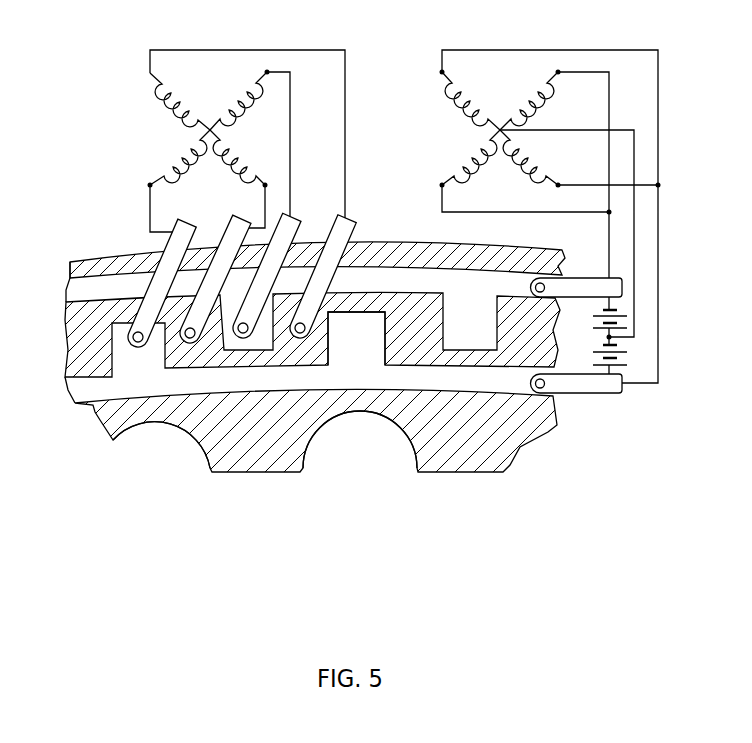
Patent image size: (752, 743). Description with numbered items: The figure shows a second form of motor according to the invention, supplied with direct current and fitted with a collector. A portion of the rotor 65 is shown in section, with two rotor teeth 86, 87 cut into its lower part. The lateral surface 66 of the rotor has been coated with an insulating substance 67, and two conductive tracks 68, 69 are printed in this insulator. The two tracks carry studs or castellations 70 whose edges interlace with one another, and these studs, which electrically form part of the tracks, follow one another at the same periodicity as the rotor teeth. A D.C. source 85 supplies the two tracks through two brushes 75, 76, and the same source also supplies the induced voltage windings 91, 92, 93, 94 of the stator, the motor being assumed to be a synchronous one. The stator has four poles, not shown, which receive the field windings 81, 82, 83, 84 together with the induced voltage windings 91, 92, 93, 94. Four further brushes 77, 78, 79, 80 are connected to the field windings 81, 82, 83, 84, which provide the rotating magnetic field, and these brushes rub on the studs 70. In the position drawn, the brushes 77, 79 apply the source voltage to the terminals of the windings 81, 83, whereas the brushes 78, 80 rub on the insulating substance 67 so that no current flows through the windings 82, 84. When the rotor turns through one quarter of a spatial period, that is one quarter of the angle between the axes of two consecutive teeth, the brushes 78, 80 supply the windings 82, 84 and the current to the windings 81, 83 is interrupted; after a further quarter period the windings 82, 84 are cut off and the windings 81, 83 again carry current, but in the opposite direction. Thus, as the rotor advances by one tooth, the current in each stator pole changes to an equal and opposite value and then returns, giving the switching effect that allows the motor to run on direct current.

The rotor 65 is at (376, 360).
The lateral surface 66 is at (70, 362).
The insulating substance 67 is at (490, 254).
The conductive track 68 is at (419, 274).
The conductive track 69 is at (360, 380).
The studs 70 is at (368, 335).
The brush 75 is at (580, 287).
The brush 76 is at (572, 386).
The brush 77 is at (152, 285).
The brush 78 is at (207, 285).
The brush 79 is at (260, 283).
The brush 80 is at (317, 281).
The field winding 81 is at (170, 161).
The field winding 82 is at (173, 106).
The field winding 83 is at (243, 107).
The field winding 84 is at (246, 163).
The D.C. source 85 is at (620, 349).
The rotor tooth 86 is at (277, 460).
The rotor tooth 87 is at (475, 467).
The induced voltage winding 91 is at (462, 160).
The induced voltage winding 92 is at (462, 105).
The induced voltage winding 93 is at (535, 105).
The induced voltage winding 94 is at (540, 163).